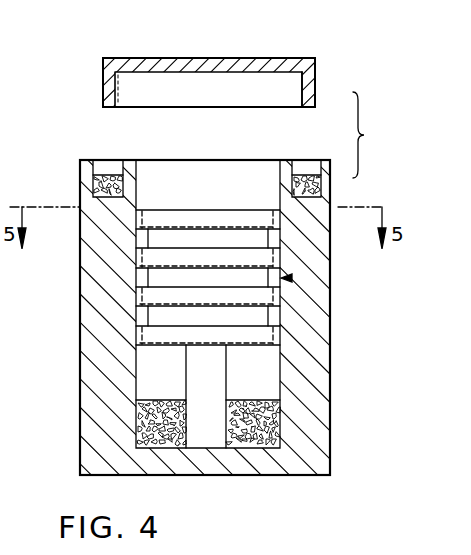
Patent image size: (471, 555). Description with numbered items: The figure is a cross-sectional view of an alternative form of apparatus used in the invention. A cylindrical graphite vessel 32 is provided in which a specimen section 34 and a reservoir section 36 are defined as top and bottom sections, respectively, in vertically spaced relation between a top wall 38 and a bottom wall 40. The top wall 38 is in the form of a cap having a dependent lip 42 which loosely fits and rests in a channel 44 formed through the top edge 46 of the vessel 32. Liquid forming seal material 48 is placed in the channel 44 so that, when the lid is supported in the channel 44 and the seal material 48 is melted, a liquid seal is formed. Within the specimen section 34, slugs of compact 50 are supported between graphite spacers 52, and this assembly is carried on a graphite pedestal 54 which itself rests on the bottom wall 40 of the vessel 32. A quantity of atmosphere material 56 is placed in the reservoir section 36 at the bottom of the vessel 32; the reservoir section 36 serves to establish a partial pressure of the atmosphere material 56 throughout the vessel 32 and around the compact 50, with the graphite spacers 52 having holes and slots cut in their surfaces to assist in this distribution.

The cylindrical graphite vessel 32 is at (333, 334).
The specimen section 34 is at (292, 278).
The reservoir section 36 is at (265, 400).
The top wall 38 is at (253, 58).
The bottom wall 40 is at (267, 465).
The dependent lip 42 is at (313, 92).
The channel 44 is at (285, 163).
The top edge 46 is at (93, 160).
The liquid forming seal material 48 is at (99, 182).
The slugs of compact 50 is at (148, 317).
The graphite spacers 52 is at (180, 297).
The graphite pedestal 54 is at (205, 428).
The atmosphere material 56 is at (137, 425).